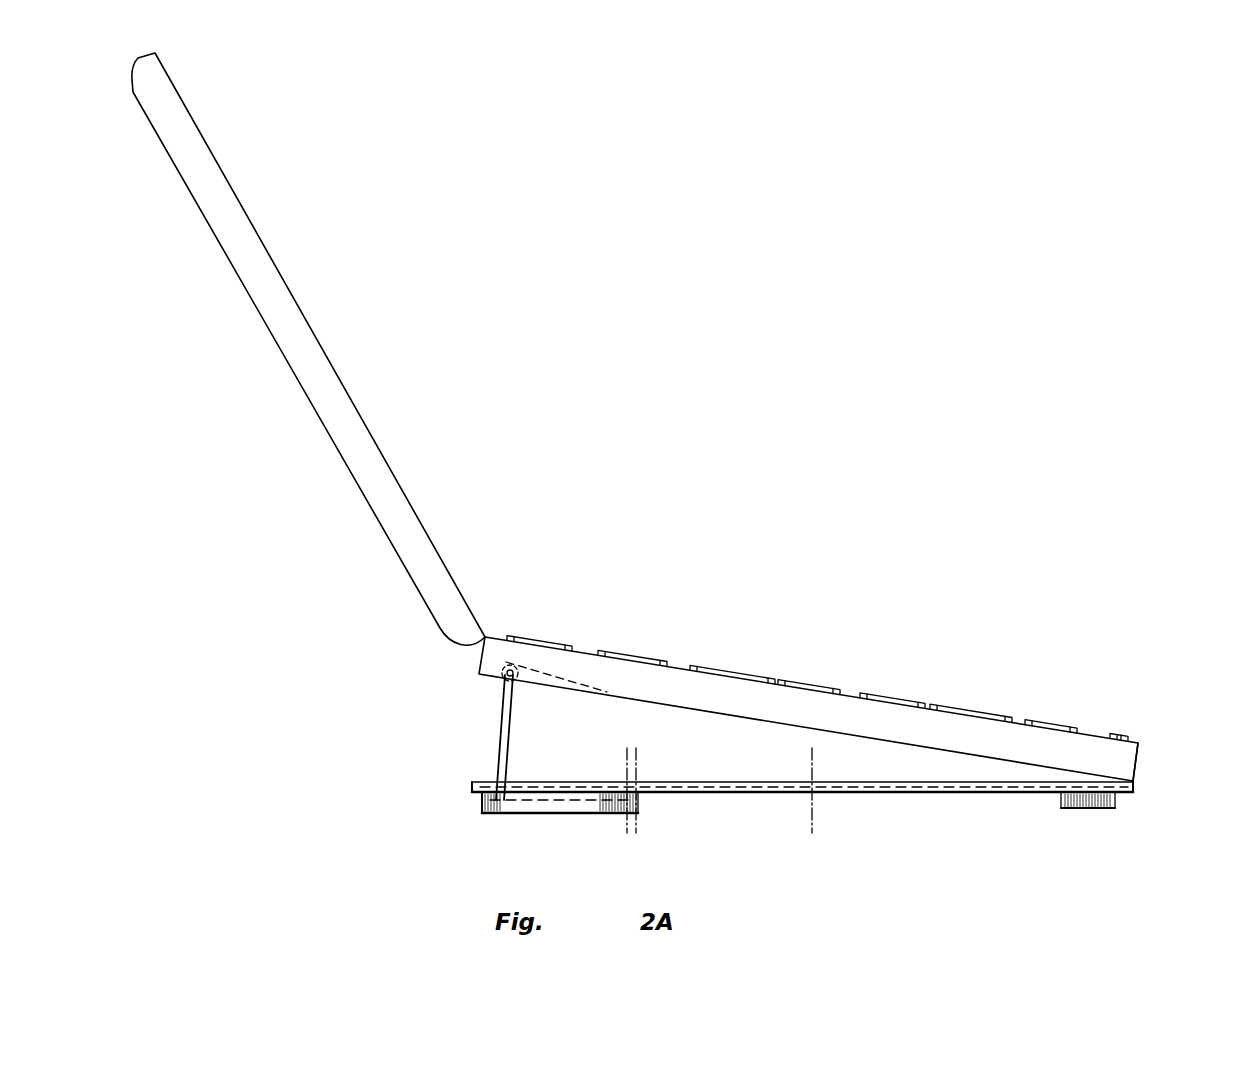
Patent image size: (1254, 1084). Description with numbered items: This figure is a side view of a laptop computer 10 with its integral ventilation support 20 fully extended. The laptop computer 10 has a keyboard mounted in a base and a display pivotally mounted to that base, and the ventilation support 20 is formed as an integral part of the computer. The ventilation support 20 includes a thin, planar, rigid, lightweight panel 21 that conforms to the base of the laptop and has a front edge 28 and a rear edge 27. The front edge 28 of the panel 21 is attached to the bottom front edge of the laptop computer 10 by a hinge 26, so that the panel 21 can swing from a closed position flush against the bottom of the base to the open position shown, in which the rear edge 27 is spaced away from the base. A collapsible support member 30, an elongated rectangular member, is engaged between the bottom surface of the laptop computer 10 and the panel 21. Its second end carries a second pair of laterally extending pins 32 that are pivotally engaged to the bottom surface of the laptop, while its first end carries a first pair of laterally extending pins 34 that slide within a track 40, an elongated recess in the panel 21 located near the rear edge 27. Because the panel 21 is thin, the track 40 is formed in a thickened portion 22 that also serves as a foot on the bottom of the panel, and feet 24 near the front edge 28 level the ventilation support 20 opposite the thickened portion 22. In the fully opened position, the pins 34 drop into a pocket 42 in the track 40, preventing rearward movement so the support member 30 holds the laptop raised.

The laptop computer 10 is at (760, 673).
The ventilation support 20 is at (908, 797).
The panel 21 is at (790, 793).
The thickened portion 22 is at (638, 802).
The feet 24 is at (1115, 807).
The hinge 26 is at (1133, 772).
The rear edge 27 is at (472, 788).
The front edge 28 is at (1135, 790).
The collapsible support member 30 is at (503, 703).
The second pair of laterally extending pins 32 is at (512, 675).
The first pair of laterally extending pins 34 is at (495, 805).
The track 40 is at (558, 797).
The pocket 42 is at (505, 812).